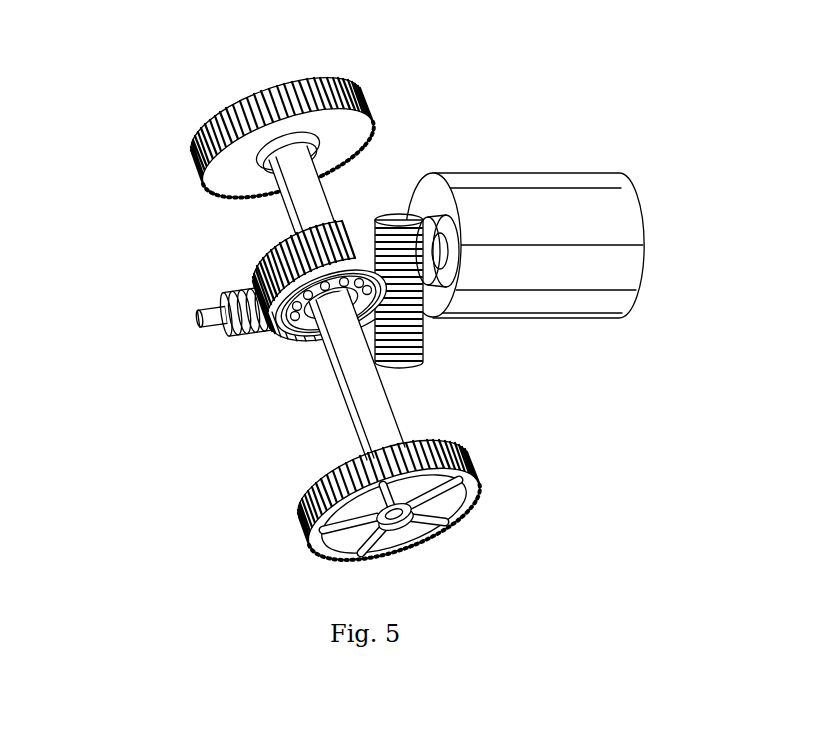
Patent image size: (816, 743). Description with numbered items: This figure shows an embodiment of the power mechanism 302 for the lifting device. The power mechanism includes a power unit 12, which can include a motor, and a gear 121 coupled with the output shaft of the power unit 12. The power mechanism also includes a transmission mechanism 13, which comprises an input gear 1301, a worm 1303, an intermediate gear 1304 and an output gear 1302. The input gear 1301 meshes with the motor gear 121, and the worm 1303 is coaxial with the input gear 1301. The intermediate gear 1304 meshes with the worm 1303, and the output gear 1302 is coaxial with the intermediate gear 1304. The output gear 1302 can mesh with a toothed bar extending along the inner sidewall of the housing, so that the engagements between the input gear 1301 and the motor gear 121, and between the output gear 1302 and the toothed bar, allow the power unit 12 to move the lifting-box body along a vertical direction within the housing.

The power unit 12 is at (527, 222).
The gear 121 is at (385, 215).
The transmission mechanism 13 is at (420, 363).
The input gear 1301 is at (443, 320).
The output gear 1302 is at (485, 500).
The worm 1303 is at (234, 334).
The intermediate gear 1304 is at (262, 272).
The power mechanism 302 is at (250, 246).